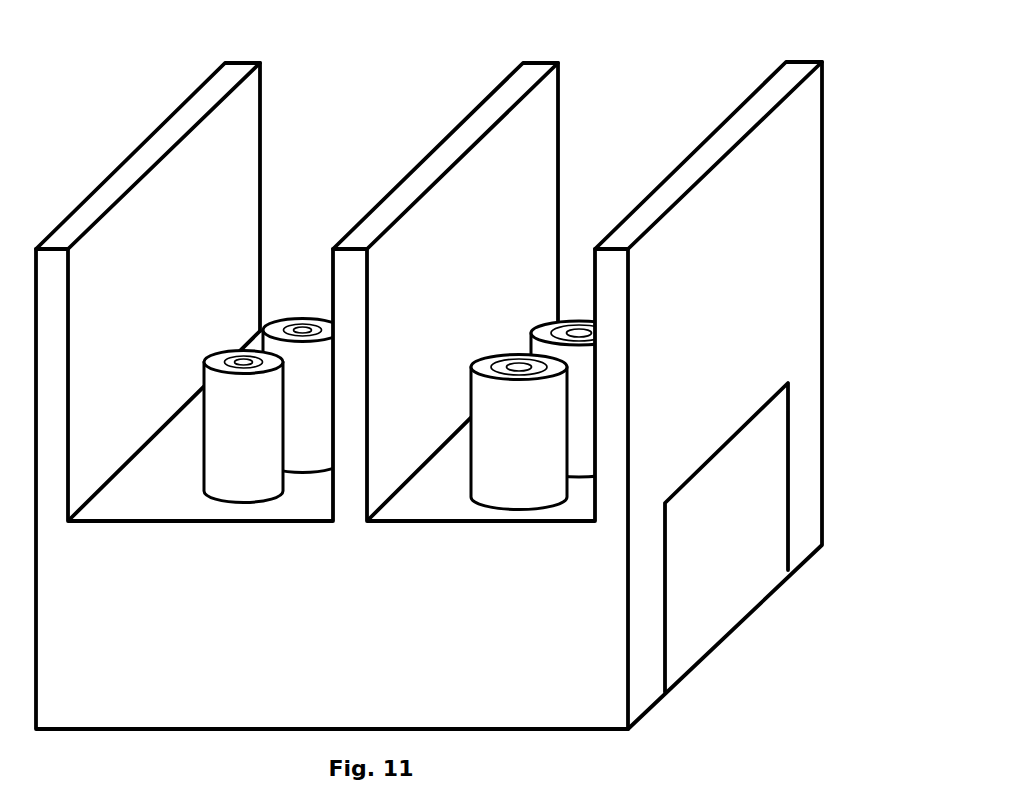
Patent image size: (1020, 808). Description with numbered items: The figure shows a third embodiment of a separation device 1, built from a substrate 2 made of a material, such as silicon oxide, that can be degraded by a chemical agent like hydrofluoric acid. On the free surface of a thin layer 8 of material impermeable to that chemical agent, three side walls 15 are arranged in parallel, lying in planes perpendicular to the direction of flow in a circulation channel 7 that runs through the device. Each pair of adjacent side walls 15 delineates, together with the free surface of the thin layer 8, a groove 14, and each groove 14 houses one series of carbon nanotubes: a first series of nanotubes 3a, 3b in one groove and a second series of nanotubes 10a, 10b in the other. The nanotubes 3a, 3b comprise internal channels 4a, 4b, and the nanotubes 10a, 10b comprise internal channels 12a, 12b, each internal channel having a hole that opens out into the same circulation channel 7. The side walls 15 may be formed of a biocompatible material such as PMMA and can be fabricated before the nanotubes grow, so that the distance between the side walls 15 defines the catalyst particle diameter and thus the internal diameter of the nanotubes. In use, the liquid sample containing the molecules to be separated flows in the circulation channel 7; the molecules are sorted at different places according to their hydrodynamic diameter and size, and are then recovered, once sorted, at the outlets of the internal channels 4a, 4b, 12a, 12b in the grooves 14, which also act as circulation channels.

The separation device 1 is at (846, 409).
The substrate 2 is at (80, 720).
The nanotube 3a is at (205, 365).
The nanotube 3b is at (268, 324).
The internal channel 4a is at (243, 356).
The internal channel 4b is at (306, 324).
The circulation channel 7 is at (730, 608).
The thin layer 8 is at (166, 505).
The nanotube 10a is at (472, 375).
The nanotube 10b is at (532, 333).
The internal channel 12a is at (517, 358).
The internal channel 12b is at (578, 330).
The groove 14 is at (386, 130).
The side wall 15 is at (225, 175).